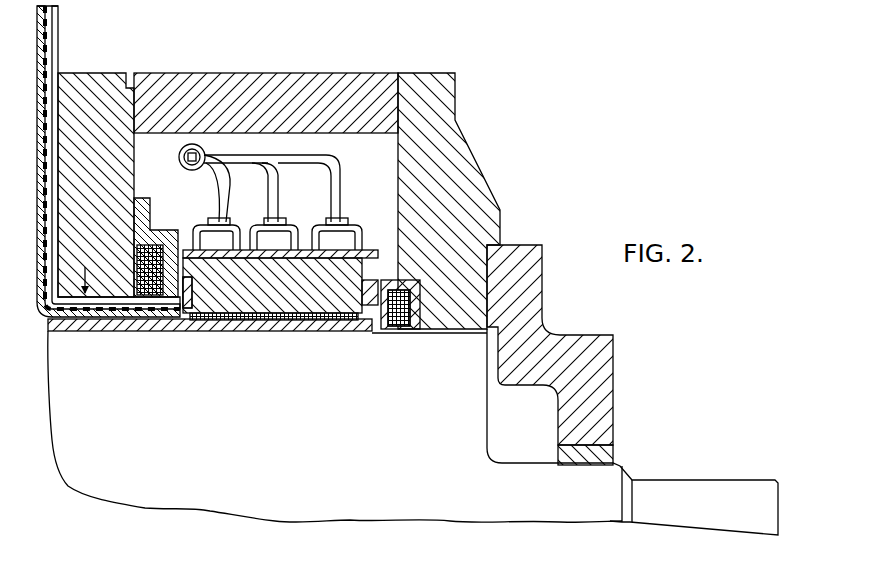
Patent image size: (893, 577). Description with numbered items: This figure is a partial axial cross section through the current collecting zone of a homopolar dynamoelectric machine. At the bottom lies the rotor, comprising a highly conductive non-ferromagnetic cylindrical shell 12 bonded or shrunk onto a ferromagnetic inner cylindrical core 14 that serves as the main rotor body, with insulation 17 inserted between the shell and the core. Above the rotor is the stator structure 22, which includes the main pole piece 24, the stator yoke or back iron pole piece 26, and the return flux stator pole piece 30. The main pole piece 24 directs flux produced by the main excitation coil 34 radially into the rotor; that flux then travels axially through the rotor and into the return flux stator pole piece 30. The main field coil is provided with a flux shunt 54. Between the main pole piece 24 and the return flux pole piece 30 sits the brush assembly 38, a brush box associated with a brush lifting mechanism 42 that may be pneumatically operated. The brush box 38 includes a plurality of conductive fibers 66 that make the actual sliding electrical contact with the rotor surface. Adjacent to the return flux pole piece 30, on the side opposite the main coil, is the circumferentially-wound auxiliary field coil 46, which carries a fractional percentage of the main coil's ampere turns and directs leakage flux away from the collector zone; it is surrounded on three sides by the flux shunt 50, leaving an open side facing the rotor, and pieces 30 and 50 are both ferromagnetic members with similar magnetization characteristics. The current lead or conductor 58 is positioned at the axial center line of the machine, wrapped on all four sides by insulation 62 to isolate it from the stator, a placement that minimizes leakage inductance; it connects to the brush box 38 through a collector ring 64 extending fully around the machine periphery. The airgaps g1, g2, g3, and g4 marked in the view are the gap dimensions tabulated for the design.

The cylindrical shell 12 is at (232, 331).
The inner cylindrical core 14 is at (232, 500).
The insulation 17 is at (290, 331).
The stator structure 22 is at (228, 73).
The main pole piece 24 is at (108, 85).
The stator yoke pole piece 26 is at (357, 85).
The return flux stator pole piece 30 is at (452, 153).
The main excitation coil 34 is at (147, 300).
The brush assembly 38 is at (343, 295).
The brush lifting mechanism 42 is at (343, 193).
The auxiliary stator coil 46 is at (413, 303).
The flux shunt 50 is at (372, 335).
The flux shunt 54 is at (167, 233).
The conductor 58 is at (52, 28).
The insulation 62 is at (60, 52).
The collector ring 64 is at (193, 288).
The conductive fibers 66 is at (315, 332).
The airgap g1 is at (83, 332).
The airgap g2 is at (435, 302).
The airgap g3 is at (486, 378).
The airgap g4 is at (530, 387).